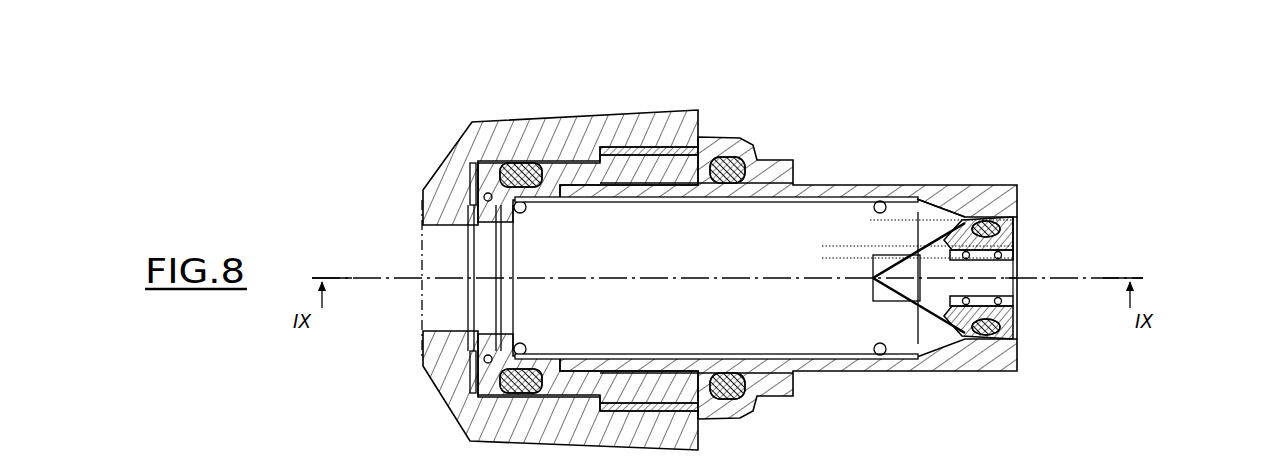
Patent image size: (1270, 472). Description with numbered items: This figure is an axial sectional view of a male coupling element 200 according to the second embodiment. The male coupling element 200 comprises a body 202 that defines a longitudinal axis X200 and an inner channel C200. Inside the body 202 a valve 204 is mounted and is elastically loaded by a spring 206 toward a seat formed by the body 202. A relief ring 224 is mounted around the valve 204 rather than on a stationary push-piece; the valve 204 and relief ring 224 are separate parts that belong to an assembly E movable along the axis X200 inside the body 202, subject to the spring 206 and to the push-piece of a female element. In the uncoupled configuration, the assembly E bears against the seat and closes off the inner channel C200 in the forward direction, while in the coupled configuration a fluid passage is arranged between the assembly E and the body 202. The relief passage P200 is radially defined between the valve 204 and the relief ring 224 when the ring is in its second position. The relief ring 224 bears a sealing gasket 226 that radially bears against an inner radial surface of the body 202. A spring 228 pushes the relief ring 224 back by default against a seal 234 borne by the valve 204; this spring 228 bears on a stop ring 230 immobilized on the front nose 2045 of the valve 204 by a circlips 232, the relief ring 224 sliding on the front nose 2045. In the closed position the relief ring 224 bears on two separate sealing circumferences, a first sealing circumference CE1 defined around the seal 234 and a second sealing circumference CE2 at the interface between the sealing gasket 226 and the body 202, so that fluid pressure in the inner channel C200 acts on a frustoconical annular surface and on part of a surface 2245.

The male coupling element 200 is at (850, 149).
The body 202 is at (833, 372).
The valve 204 is at (935, 340).
The spring 206 is at (765, 207).
The relief ring 224 is at (973, 340).
The sealing gasket 226 is at (982, 225).
The spring 228 is at (1005, 312).
The stop ring 230 is at (1020, 250).
The circlips 232 is at (1023, 262).
The seal 234 is at (935, 238).
The front nose 2045 is at (1018, 268).
The surface 2245 is at (907, 297).
The relief passage P200 is at (1012, 283).
The first sealing circumference CE1 is at (891, 252).
The second sealing circumference CE2 is at (921, 220).
The inner channel C200 is at (688, 309).
The longitudinal axis X200 is at (372, 278).
The assembly E is at (1003, 418).